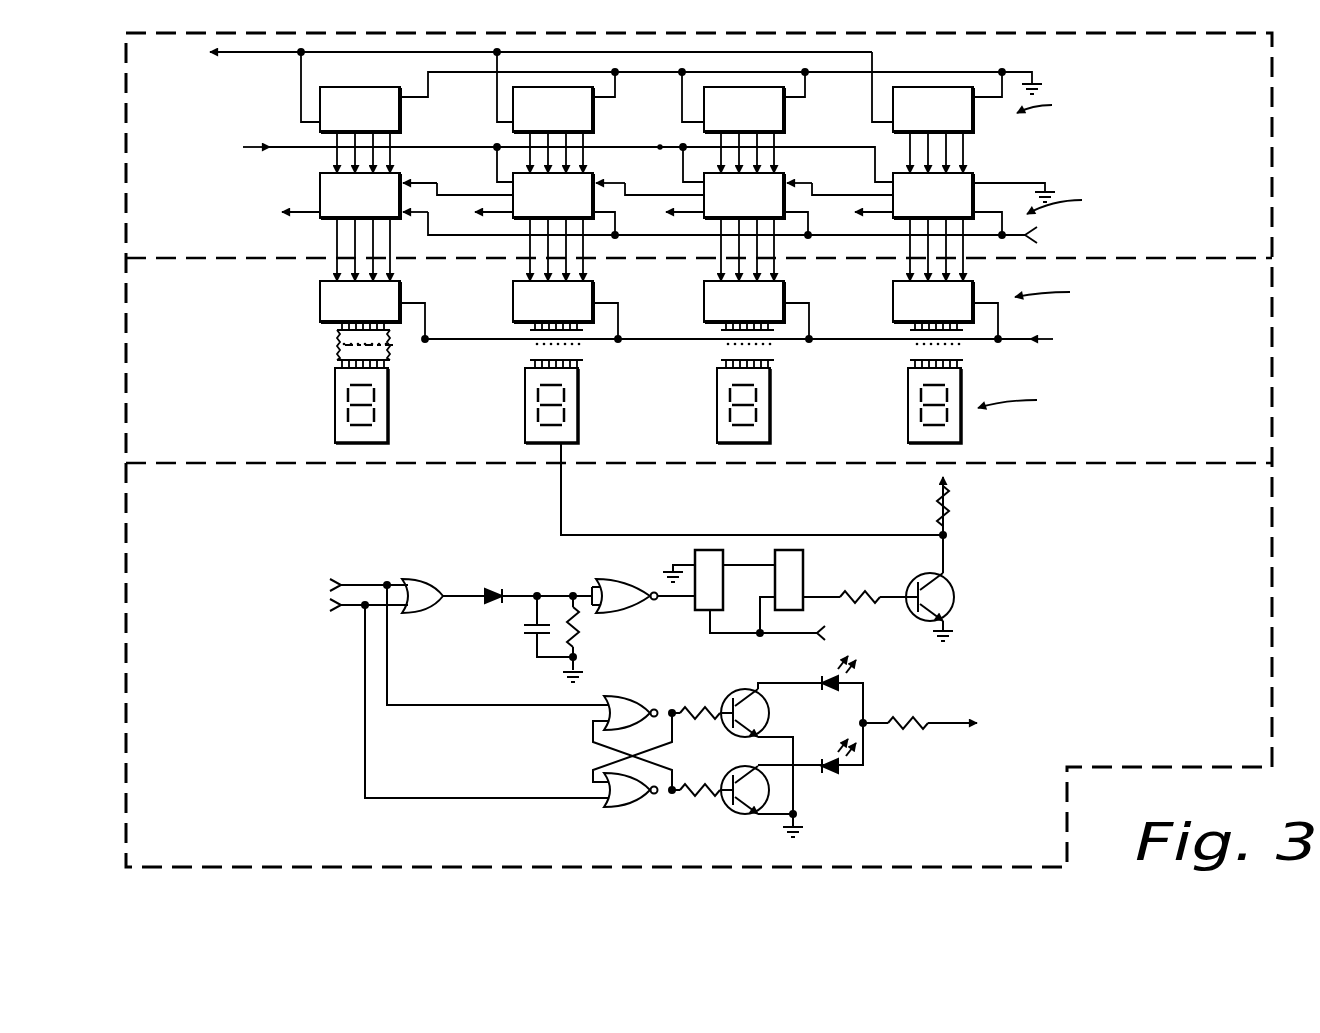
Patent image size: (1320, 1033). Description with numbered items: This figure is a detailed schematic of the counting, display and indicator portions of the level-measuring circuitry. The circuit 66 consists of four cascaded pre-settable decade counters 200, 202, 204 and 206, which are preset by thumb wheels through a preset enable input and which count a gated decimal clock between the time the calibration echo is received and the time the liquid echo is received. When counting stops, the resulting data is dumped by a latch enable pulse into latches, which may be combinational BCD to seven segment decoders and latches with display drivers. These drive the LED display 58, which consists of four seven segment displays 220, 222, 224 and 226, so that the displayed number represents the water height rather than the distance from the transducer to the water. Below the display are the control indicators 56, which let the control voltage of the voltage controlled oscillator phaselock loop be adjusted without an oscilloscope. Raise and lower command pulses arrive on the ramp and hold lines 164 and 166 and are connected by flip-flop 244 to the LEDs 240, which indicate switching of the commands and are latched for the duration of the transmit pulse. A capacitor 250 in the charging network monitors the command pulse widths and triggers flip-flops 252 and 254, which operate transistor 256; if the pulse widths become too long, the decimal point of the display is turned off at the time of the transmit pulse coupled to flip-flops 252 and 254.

The control indicators 56 is at (150, 722).
The LED display 58 is at (158, 370).
The circuit 66 is at (149, 205).
The ramp and hold line 164 is at (343, 583).
The ramp and hold line 166 is at (352, 608).
The pre-settable decade counter 200 is at (375, 123).
The pre-settable decade counter 202 is at (568, 123).
The pre-settable decade counter 204 is at (759, 123).
The pre-settable decade counter 206 is at (948, 123).
The seven segment display 220 is at (397, 360).
The seven segment display 222 is at (591, 360).
The seven segment display 224 is at (786, 360).
The seven segment display 226 is at (963, 393).
The LED 240 is at (860, 676).
The flip-flop 244 is at (598, 752).
The timing capacitor 250 is at (528, 634).
The flip-flop 252 is at (735, 524).
The flip-flop 254 is at (798, 548).
The transistor 256 is at (953, 598).